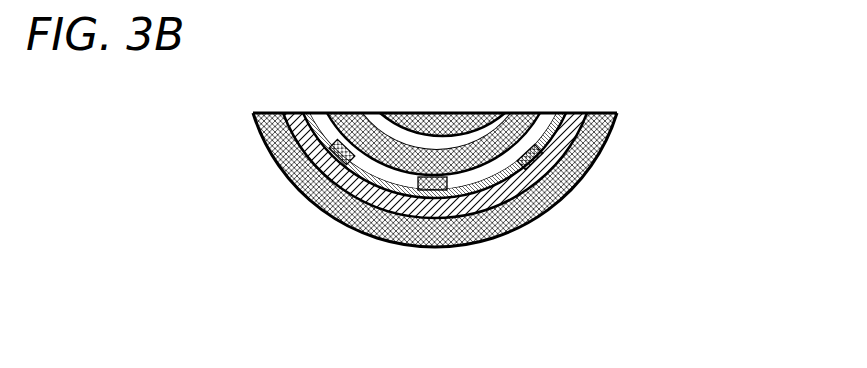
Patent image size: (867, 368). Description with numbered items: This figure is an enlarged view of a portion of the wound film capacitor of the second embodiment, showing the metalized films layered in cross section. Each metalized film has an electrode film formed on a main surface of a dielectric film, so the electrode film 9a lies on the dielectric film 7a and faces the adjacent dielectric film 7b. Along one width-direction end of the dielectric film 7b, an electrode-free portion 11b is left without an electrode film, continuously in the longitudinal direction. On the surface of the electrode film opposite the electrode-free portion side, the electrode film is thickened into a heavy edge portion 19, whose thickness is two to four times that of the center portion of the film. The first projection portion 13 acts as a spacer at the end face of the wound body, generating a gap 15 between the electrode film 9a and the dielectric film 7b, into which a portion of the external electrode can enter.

The dielectric film 7a is at (432, 118).
The dielectric film 7b is at (527, 118).
The electrode film 9a is at (380, 208).
The electrode-free portion 11b is at (453, 147).
The first projection portion 13 is at (338, 142).
The gap 15 is at (383, 176).
The heavy edge portion 19 is at (315, 160).